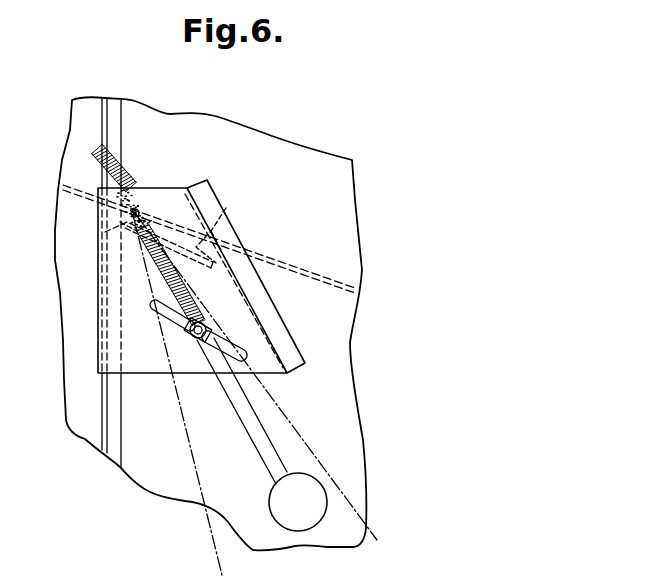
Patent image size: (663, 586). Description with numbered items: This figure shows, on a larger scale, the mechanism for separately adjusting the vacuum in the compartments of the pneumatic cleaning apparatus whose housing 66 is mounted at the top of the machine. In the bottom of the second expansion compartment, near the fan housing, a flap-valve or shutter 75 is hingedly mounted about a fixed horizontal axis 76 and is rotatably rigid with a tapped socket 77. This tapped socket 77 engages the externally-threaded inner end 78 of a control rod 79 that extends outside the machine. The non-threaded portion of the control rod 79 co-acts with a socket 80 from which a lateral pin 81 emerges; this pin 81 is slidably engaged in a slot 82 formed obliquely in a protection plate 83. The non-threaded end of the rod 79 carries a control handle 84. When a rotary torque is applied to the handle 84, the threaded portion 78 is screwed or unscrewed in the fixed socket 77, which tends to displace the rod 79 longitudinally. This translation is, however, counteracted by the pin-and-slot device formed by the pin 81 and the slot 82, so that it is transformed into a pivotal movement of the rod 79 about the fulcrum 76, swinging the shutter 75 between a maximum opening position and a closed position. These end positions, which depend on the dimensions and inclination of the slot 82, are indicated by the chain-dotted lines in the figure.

The housing 66 is at (210, 323).
The flap-valve or shutter 75 is at (219, 216).
The fixed horizontal axis 76 is at (137, 208).
The tapped socket 77 is at (105, 232).
The externally-threaded inner end 78 is at (118, 162).
The control rod 79 is at (248, 422).
The socket 80 is at (207, 343).
The lateral pin 81 is at (188, 335).
The slot 82 is at (167, 313).
The protection plate 83 is at (255, 343).
The control handle 84 is at (280, 505).